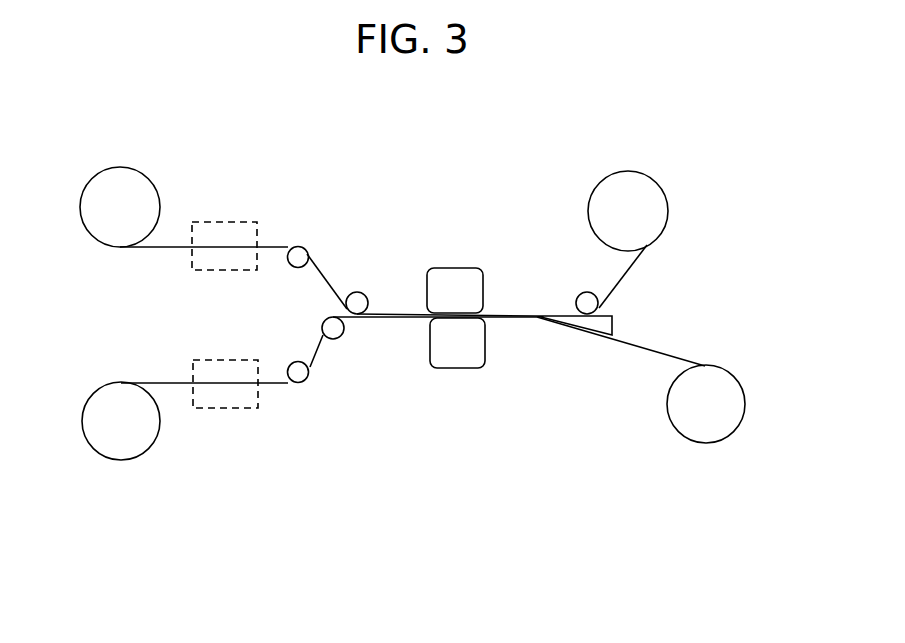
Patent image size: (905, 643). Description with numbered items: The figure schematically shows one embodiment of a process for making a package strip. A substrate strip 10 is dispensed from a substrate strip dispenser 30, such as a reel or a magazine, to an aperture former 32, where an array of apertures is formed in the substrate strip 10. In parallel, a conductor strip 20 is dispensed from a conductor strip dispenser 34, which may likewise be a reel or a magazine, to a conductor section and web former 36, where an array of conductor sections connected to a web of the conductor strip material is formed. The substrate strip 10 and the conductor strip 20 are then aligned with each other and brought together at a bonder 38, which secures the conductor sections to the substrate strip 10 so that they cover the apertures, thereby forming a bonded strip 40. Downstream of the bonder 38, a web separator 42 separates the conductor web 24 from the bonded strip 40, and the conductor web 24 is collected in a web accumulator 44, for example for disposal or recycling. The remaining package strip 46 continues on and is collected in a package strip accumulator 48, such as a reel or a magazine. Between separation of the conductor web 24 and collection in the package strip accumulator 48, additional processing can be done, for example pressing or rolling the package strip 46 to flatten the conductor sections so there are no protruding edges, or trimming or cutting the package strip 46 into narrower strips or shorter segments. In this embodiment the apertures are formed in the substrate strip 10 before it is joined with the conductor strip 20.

The substrate strip 10 is at (170, 382).
The conductor strip 20 is at (172, 248).
The conductor web 24 is at (628, 277).
The substrate strip dispenser 30 is at (137, 462).
The aperture former 32 is at (243, 408).
The conductor strip dispenser 34 is at (128, 167).
The conductor section and web former 36 is at (240, 222).
The bonder 38 is at (465, 270).
The bonded strip 40 is at (527, 323).
The web separator 42 is at (612, 323).
The web accumulator 44 is at (600, 182).
The package strip 46 is at (647, 350).
The package strip accumulator 48 is at (682, 435).